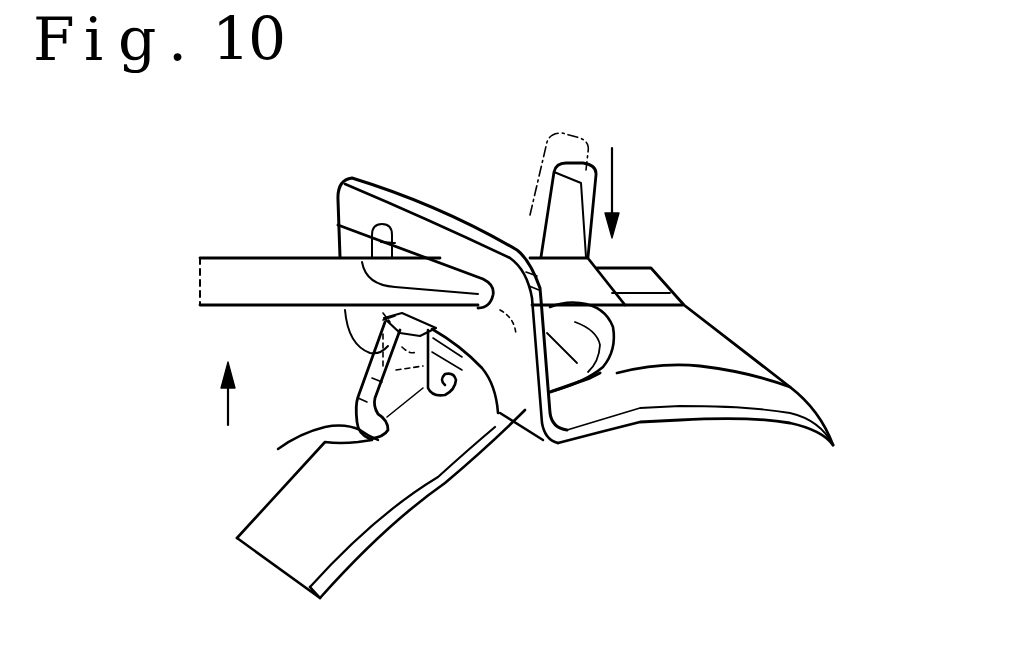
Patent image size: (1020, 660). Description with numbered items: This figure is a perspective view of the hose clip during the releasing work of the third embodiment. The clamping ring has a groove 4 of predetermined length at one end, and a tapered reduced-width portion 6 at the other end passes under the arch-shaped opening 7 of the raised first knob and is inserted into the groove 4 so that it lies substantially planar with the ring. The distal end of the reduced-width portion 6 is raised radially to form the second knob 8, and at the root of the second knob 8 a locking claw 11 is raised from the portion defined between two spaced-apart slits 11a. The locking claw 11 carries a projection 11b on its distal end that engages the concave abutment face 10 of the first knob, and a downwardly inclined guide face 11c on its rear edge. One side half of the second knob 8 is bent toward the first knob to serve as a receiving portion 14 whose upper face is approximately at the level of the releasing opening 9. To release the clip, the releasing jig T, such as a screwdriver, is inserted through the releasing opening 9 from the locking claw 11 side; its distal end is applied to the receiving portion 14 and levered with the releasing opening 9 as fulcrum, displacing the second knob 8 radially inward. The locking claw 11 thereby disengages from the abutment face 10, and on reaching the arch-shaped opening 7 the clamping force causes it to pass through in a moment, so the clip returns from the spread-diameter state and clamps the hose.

The releasing jig T is at (228, 273).
The groove 4 is at (697, 352).
The reduced-width portion 6 is at (345, 490).
The arch-shaped opening 7 is at (480, 400).
The second knob 8 is at (585, 318).
The releasing opening 9 is at (338, 226).
The abutment face 10 is at (411, 318).
The locking claw 11 is at (398, 392).
The slits 11a is at (300, 436).
The projection 11b is at (383, 322).
The guide face 11c is at (372, 378).
The receiving portion 14 is at (612, 333).